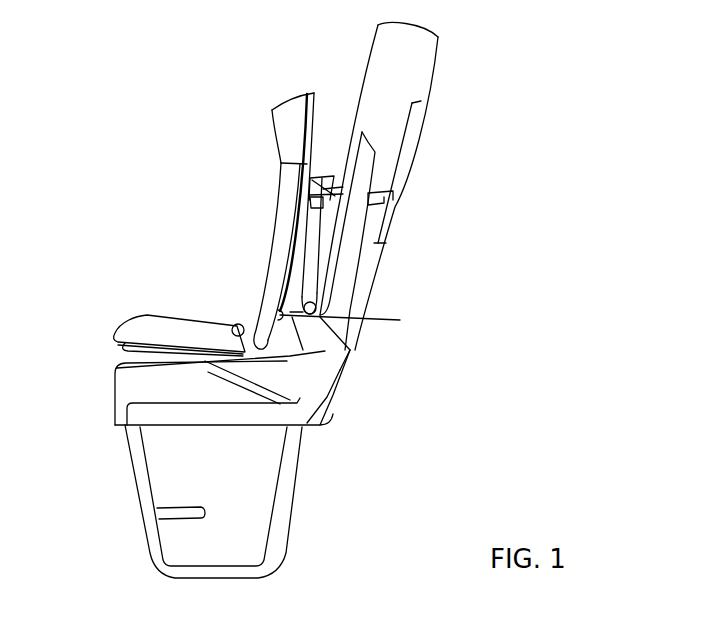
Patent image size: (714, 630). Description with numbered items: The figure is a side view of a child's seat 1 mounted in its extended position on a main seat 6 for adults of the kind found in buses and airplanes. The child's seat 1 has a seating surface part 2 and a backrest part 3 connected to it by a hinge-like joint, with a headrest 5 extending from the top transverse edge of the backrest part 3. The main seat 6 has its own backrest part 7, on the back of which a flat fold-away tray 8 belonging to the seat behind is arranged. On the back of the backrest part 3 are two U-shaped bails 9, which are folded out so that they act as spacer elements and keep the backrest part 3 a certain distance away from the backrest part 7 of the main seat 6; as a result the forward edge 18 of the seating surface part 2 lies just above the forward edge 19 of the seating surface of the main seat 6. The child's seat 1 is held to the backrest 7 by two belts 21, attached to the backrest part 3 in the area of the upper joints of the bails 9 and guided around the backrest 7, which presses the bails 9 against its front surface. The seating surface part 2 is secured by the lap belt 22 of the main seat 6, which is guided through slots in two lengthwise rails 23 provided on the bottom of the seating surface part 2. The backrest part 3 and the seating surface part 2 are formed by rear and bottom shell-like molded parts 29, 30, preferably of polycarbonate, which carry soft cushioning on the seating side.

The child's seat 1 is at (268, 220).
The seating surface part 2 is at (172, 323).
The backrest part 3 is at (272, 258).
The headrest 5 is at (280, 117).
The main seat 6 is at (440, 70).
The backrest part 7 is at (416, 44).
The tray 8 is at (405, 152).
The U-shaped bail 9 is at (322, 190).
The forward edge 18 is at (117, 333).
The forward edge 19 is at (117, 368).
The belt 21 is at (373, 198).
The lap belt 22 is at (270, 388).
The lengthwise rail 23 is at (155, 357).
The molded part 29 is at (288, 265).
The molded part 30 is at (125, 343).